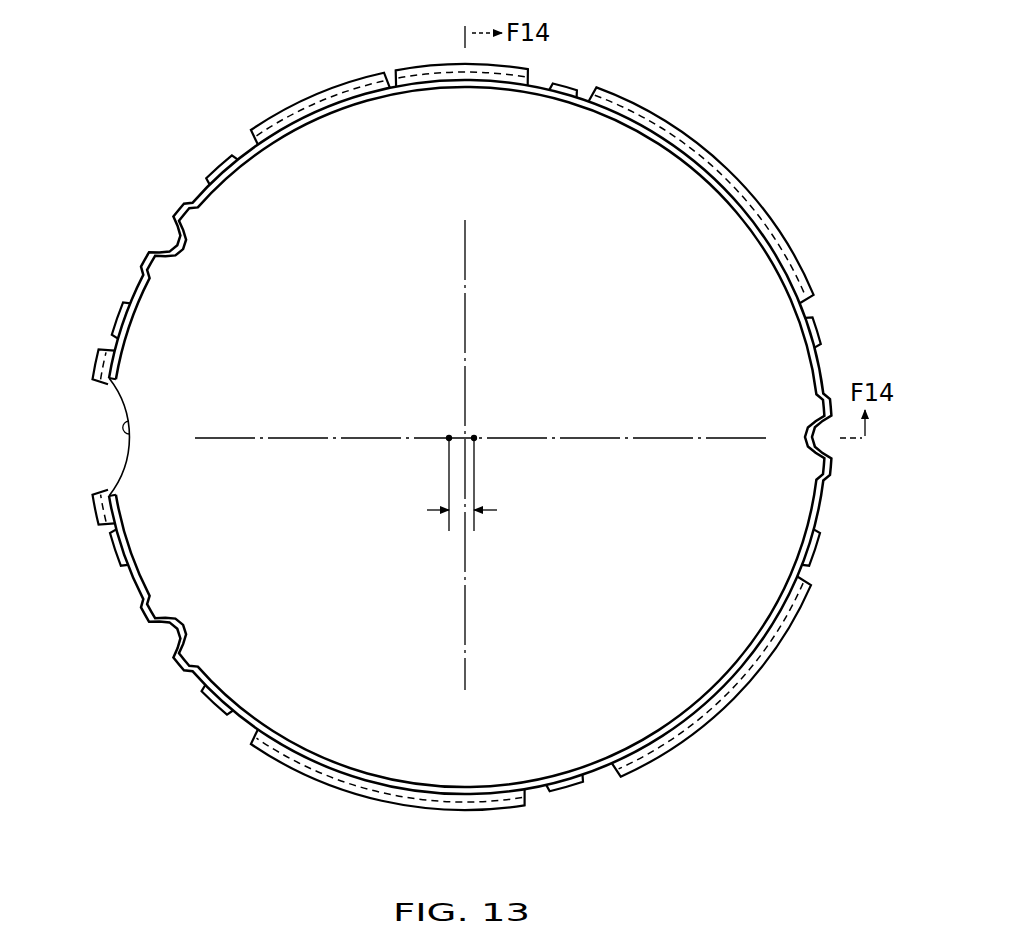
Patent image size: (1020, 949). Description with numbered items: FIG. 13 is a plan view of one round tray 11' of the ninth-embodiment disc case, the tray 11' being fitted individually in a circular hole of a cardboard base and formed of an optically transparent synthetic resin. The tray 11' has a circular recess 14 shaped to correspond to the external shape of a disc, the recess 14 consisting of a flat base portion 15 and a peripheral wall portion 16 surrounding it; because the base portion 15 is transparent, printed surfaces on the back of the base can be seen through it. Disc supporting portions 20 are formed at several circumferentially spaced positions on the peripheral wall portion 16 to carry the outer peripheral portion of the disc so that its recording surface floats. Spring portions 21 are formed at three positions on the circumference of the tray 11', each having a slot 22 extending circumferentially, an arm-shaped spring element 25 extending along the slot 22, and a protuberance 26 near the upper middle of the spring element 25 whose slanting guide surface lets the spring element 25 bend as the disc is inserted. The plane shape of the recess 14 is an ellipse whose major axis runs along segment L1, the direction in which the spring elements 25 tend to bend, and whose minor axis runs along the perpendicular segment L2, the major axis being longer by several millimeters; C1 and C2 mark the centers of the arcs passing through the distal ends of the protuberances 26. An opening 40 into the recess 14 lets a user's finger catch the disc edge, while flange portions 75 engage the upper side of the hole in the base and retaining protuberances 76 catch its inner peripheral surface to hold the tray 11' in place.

The tray 11' is at (470, 413).
The recess 14 is at (501, 178).
The base portion 15 is at (335, 156).
The peripheral wall portion 16 is at (398, 96).
The disc supporting portion 20 is at (526, 96).
The spring portion 21 is at (207, 231).
The slot 22 is at (181, 244).
The spring element 25 is at (152, 248).
The protuberance 26 is at (168, 258).
The opening 40 is at (131, 429).
The flange portion 75 is at (328, 78).
The retaining protuberance 76 is at (217, 165).
The segment L1 is at (280, 438).
The segment L2 is at (474, 279).
The center C1 is at (449, 438).
The center C2 is at (474, 438).